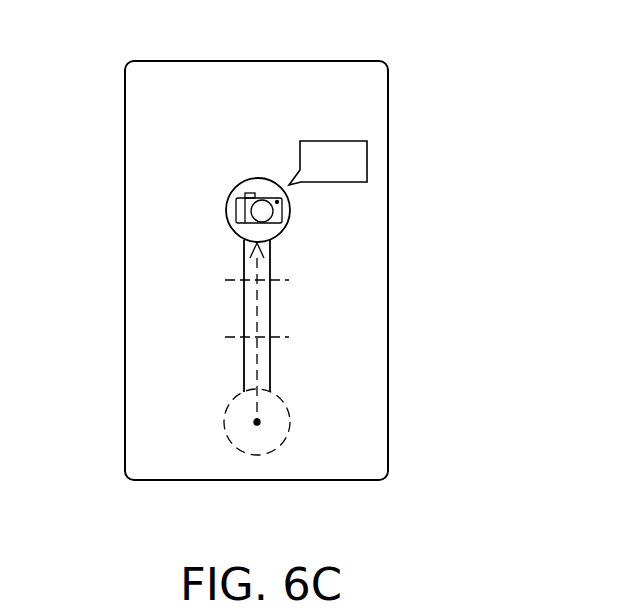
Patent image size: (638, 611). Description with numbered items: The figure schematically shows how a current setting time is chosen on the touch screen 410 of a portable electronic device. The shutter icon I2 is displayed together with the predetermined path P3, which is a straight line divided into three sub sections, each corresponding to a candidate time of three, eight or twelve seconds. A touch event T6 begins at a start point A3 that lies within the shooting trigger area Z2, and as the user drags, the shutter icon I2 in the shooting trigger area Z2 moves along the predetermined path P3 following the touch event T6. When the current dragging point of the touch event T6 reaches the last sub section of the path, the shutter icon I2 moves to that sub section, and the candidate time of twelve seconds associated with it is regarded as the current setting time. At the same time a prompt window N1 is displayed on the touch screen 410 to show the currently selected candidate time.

The touch screen 410 is at (388, 97).
The prompt window N1 is at (367, 158).
The shutter icon I2 is at (226, 207).
The predetermined path P3 is at (270, 305).
The touch event T6 is at (270, 360).
The start point A3 is at (257, 422).
The shooting trigger area Z2 is at (235, 400).